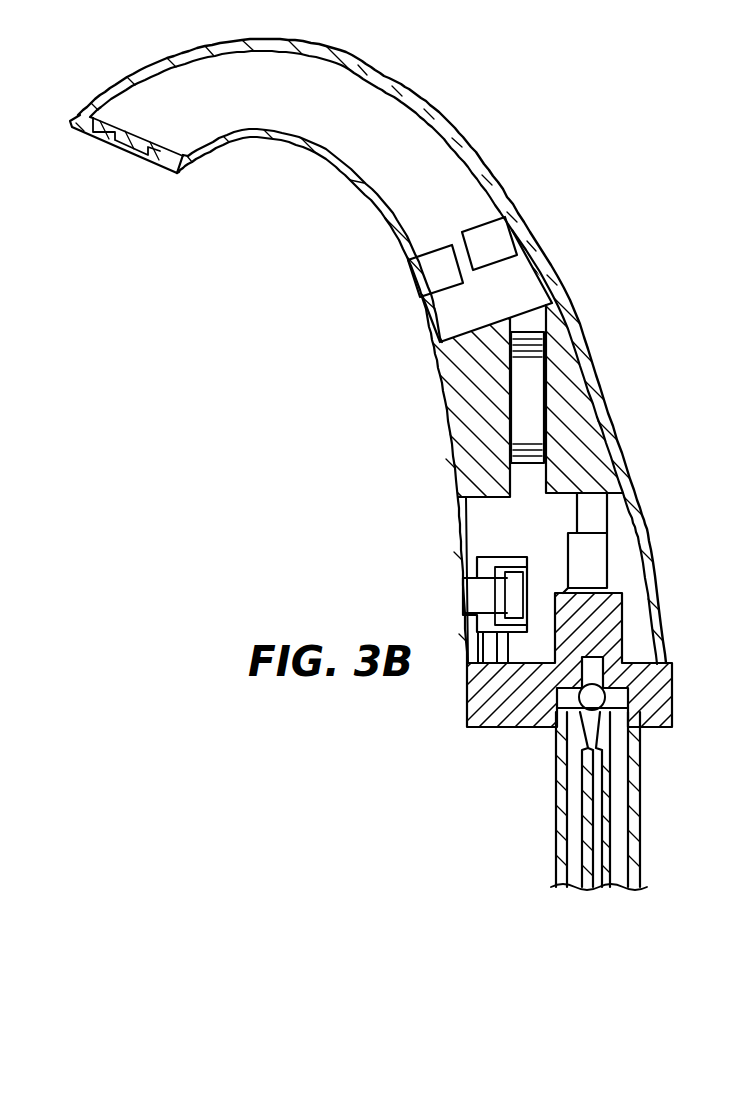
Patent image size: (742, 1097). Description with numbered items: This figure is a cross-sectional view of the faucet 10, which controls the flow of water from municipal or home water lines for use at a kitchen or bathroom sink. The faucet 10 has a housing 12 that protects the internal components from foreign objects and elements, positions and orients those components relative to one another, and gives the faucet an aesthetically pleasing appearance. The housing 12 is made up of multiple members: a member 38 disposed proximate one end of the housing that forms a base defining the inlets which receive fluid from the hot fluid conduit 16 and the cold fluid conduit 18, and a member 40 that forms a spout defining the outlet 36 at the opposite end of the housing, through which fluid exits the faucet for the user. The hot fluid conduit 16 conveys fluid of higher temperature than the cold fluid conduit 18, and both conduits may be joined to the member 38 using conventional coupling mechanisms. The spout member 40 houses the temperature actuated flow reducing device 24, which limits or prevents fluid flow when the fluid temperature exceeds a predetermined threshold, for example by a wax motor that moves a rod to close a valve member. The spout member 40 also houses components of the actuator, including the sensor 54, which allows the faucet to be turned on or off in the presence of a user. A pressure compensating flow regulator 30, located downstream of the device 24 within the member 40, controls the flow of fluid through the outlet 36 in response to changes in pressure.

The faucet 10 is at (562, 96).
The housing 12 is at (424, 99).
The outlet 36 is at (125, 137).
The pressure compensating flow regulator 30 is at (500, 238).
The member 40 is at (598, 392).
The temperature actuated flow reducing device 24 is at (530, 407).
The sensor 54 is at (485, 596).
The member 38 is at (669, 684).
The hot fluid conduit 16 is at (596, 774).
The cold fluid conduit 18 is at (545, 820).